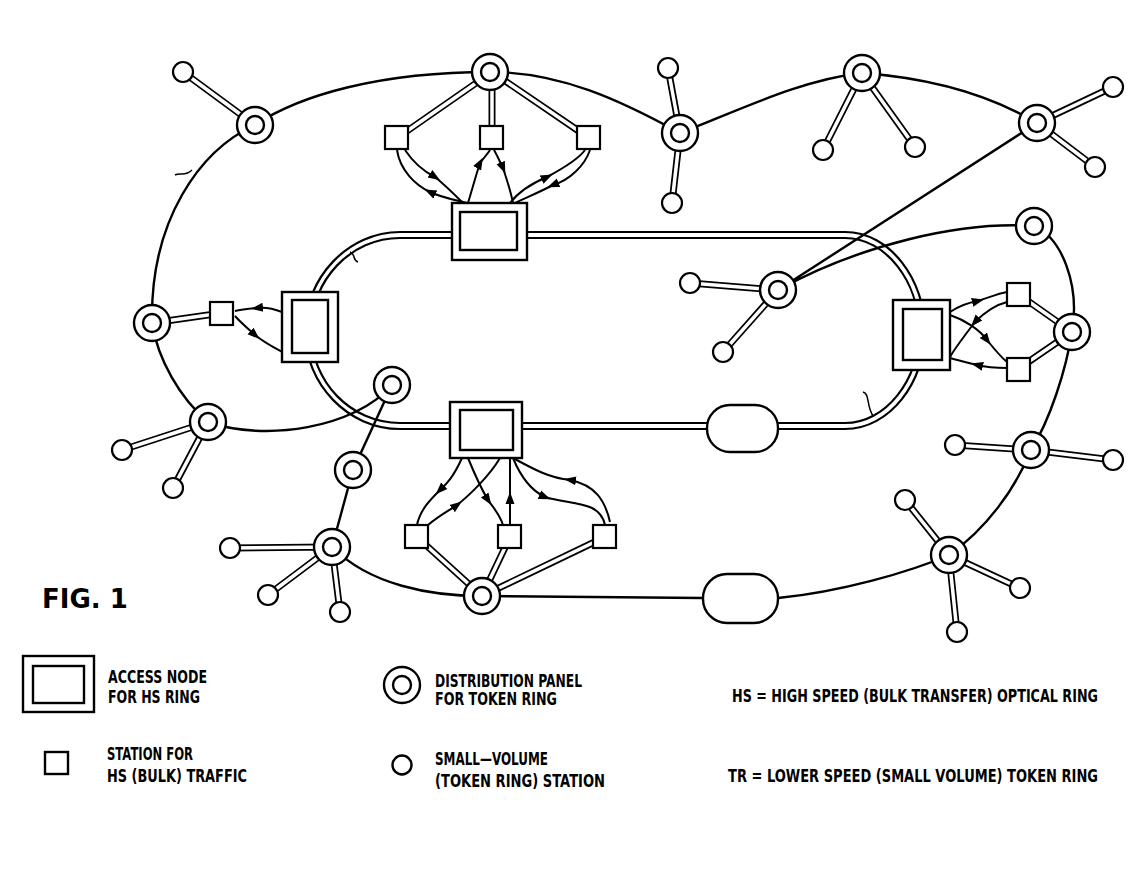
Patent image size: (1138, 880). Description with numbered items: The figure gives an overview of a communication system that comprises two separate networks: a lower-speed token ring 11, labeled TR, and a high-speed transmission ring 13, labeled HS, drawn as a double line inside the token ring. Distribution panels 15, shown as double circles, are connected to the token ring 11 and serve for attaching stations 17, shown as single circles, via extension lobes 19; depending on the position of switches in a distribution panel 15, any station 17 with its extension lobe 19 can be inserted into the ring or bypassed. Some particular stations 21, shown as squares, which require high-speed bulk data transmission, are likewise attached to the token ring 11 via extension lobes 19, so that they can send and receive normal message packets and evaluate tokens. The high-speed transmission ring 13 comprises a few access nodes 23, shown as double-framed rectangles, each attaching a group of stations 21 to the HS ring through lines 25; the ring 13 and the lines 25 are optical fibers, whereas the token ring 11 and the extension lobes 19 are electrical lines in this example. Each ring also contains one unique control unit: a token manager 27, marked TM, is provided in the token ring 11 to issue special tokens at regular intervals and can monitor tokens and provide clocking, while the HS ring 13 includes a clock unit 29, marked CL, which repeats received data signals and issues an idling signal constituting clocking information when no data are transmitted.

The token ring 11 is at (158, 215).
The high-speed transmission ring 13 is at (364, 235).
The distribution panel 15 is at (398, 368).
The station 17 is at (231, 538).
The extension lobe 19 is at (433, 565).
The station 21 is at (405, 538).
The access node 23 is at (478, 401).
The line 25 is at (548, 470).
The token manager 27 is at (733, 623).
The clock unit 29 is at (748, 452).